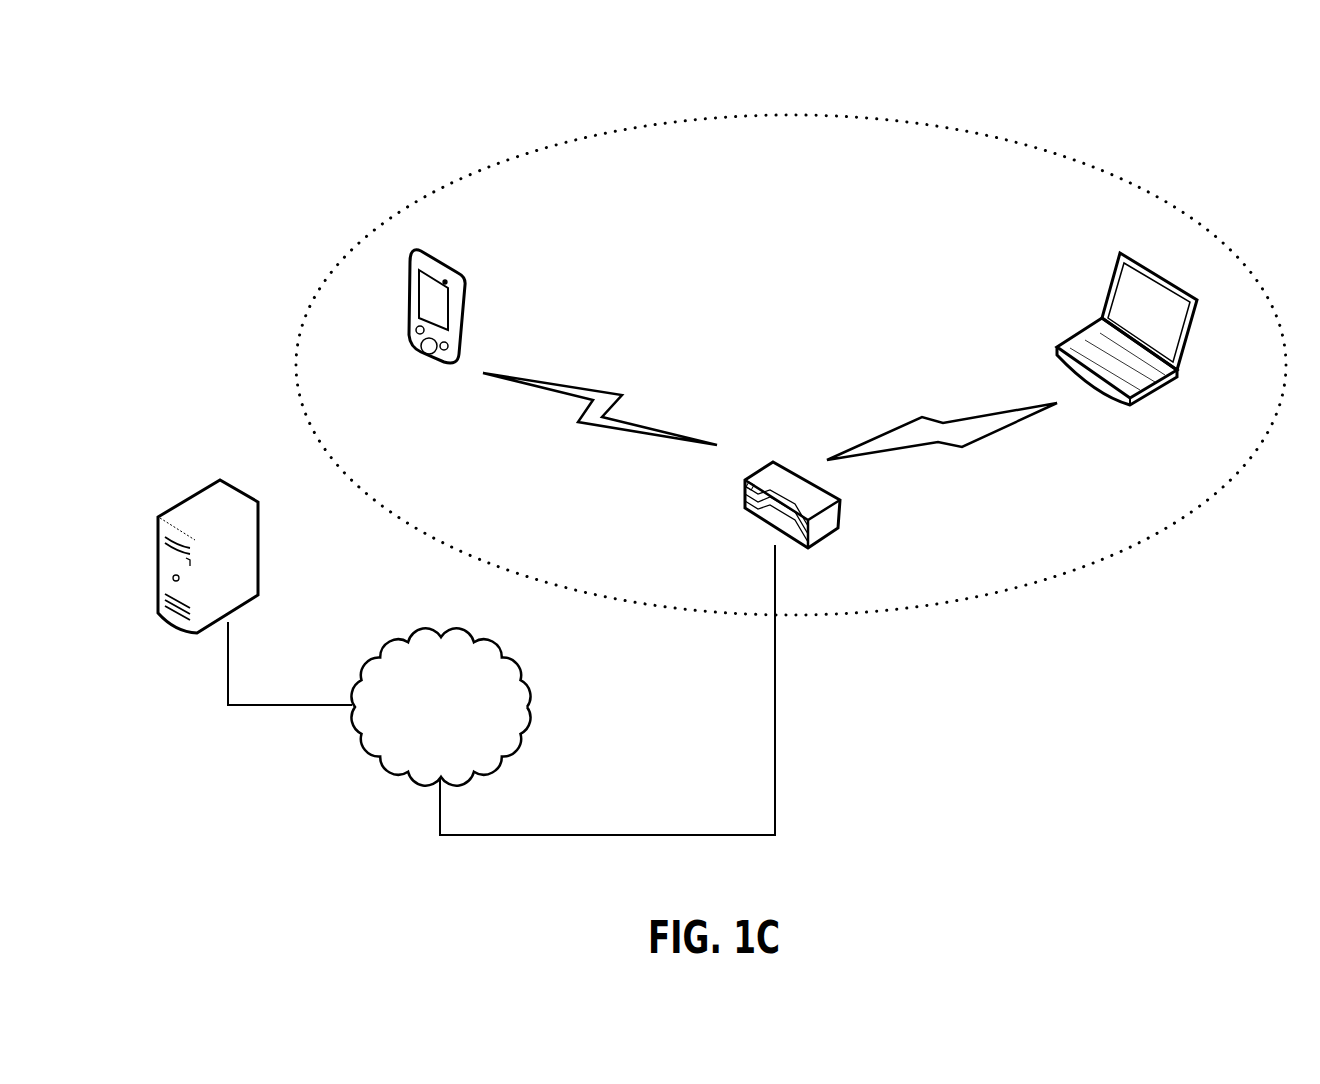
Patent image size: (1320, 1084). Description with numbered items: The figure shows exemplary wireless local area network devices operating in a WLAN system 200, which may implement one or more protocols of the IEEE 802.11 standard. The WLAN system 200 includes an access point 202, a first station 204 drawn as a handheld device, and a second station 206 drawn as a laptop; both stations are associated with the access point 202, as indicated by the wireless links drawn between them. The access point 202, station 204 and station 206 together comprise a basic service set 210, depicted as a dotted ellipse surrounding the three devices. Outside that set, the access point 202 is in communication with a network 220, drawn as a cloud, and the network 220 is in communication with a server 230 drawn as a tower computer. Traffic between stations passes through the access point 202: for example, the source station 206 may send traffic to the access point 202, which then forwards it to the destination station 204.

The WLAN system 200 is at (463, 94).
The access point 202 is at (750, 510).
The station 204 is at (422, 352).
The station 206 is at (1165, 382).
The basic service set 210 is at (1104, 170).
The network 220 is at (459, 719).
The server 230 is at (186, 498).